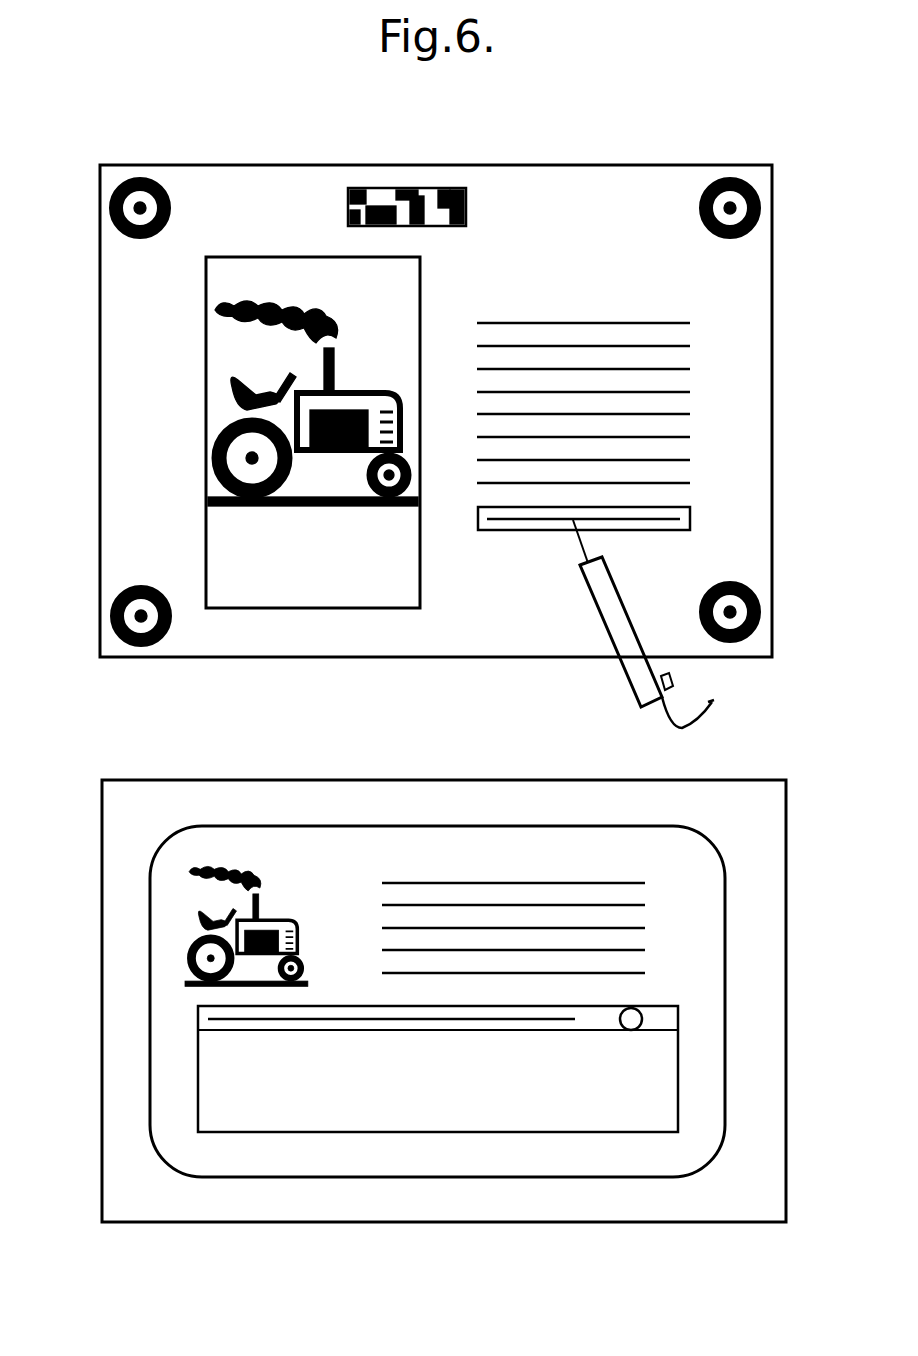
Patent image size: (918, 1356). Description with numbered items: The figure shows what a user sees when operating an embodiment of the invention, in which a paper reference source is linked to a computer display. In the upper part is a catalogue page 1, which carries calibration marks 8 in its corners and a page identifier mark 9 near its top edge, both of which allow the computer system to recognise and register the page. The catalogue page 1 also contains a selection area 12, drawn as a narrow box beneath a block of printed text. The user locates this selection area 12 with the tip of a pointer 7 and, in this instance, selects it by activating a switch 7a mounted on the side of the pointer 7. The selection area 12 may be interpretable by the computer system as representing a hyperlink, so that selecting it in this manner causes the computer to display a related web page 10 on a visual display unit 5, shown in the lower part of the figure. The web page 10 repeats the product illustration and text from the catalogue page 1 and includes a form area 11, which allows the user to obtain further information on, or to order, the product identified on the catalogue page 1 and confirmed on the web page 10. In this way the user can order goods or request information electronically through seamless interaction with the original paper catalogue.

The catalogue page 1 is at (132, 500).
The visual display unit 5 is at (122, 916).
The pointer 7 is at (640, 673).
The switch 7a is at (668, 685).
The calibration marks 8 is at (124, 178).
The page identifier mark 9 is at (426, 188).
The web page 10 is at (413, 865).
The form area 11 is at (342, 1118).
The selection area 12 is at (685, 512).